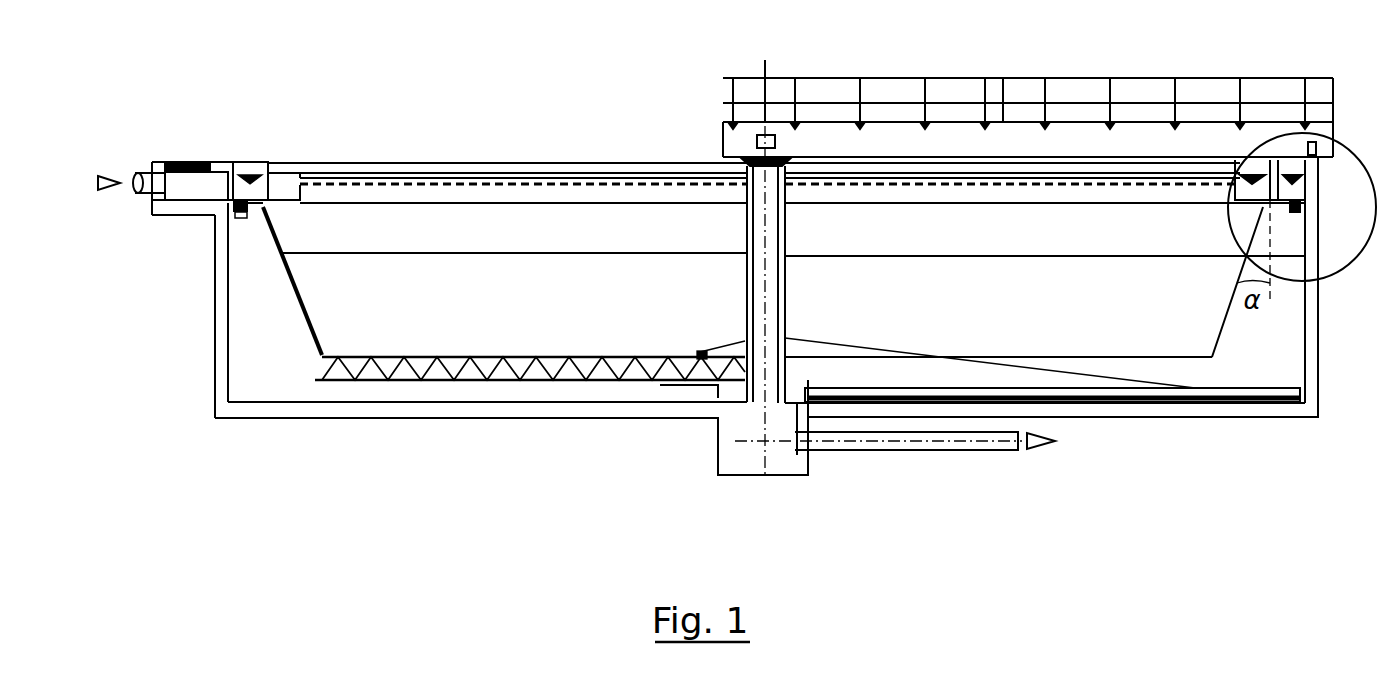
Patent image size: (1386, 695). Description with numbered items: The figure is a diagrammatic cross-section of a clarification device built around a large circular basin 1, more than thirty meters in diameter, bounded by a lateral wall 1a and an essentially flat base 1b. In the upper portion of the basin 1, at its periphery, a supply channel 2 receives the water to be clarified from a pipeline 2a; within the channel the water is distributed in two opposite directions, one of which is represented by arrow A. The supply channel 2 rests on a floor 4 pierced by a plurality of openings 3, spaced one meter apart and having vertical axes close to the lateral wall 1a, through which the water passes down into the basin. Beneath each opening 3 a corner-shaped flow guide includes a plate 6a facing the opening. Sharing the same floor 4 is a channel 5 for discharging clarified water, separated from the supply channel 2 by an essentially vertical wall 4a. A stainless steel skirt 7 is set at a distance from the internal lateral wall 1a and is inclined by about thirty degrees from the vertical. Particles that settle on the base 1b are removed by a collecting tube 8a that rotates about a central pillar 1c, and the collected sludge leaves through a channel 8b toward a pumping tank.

The circular basin 1 is at (208, 385).
The lateral wall 1a is at (213, 320).
The base 1b is at (445, 418).
The central pillar 1c is at (775, 297).
The supply channel 2 is at (255, 160).
The pipeline 2a is at (150, 166).
The openings 3 is at (230, 165).
The floor 4 is at (251, 215).
The vertical wall 4a is at (270, 160).
The channel 5 is at (292, 165).
The plate 6a is at (236, 212).
The skirt 7 is at (282, 250).
The collecting tube 8a is at (1210, 402).
The channel 8b is at (910, 442).
The arrow A is at (1330, 283).